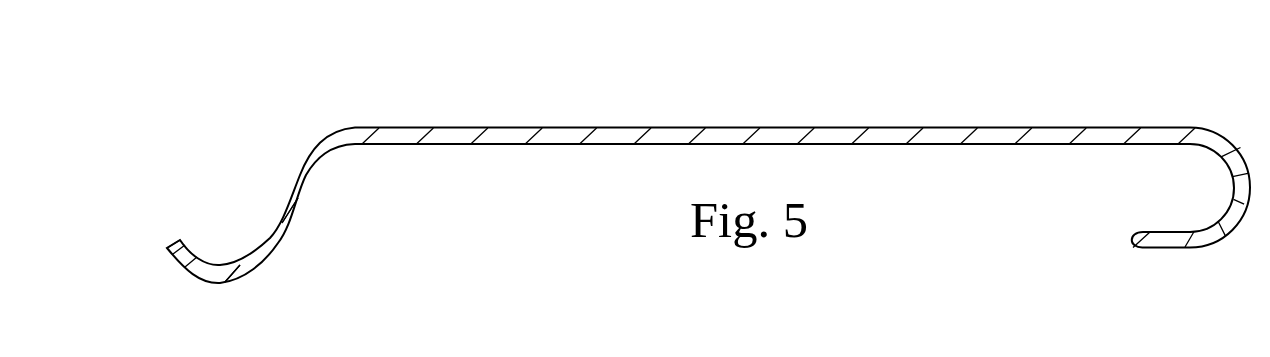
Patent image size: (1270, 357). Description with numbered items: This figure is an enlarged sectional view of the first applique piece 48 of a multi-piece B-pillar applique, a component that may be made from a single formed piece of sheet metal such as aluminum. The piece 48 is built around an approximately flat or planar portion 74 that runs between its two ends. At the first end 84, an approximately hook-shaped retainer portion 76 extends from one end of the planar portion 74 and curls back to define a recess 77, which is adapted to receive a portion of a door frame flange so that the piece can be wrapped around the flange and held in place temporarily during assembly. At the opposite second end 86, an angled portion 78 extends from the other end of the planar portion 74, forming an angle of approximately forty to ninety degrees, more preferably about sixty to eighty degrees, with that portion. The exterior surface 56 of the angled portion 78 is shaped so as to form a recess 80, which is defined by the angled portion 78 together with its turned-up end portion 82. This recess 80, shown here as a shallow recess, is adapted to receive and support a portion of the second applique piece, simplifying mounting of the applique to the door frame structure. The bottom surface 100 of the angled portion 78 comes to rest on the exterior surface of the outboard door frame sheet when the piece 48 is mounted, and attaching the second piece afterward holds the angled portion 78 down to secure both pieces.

The first applique piece 48 is at (1000, 81).
The exterior surface 56 is at (730, 127).
The flat or planar portion 74 is at (998, 137).
The hook-shaped retainer portion 76 is at (1247, 160).
The recess 77 is at (1153, 183).
The angled portion 78 is at (297, 198).
The recess 80 is at (228, 228).
The turned-up end portion 82 is at (168, 258).
The first end 84 is at (1130, 235).
The second end 86 is at (172, 249).
The bottom surface 100 is at (237, 283).